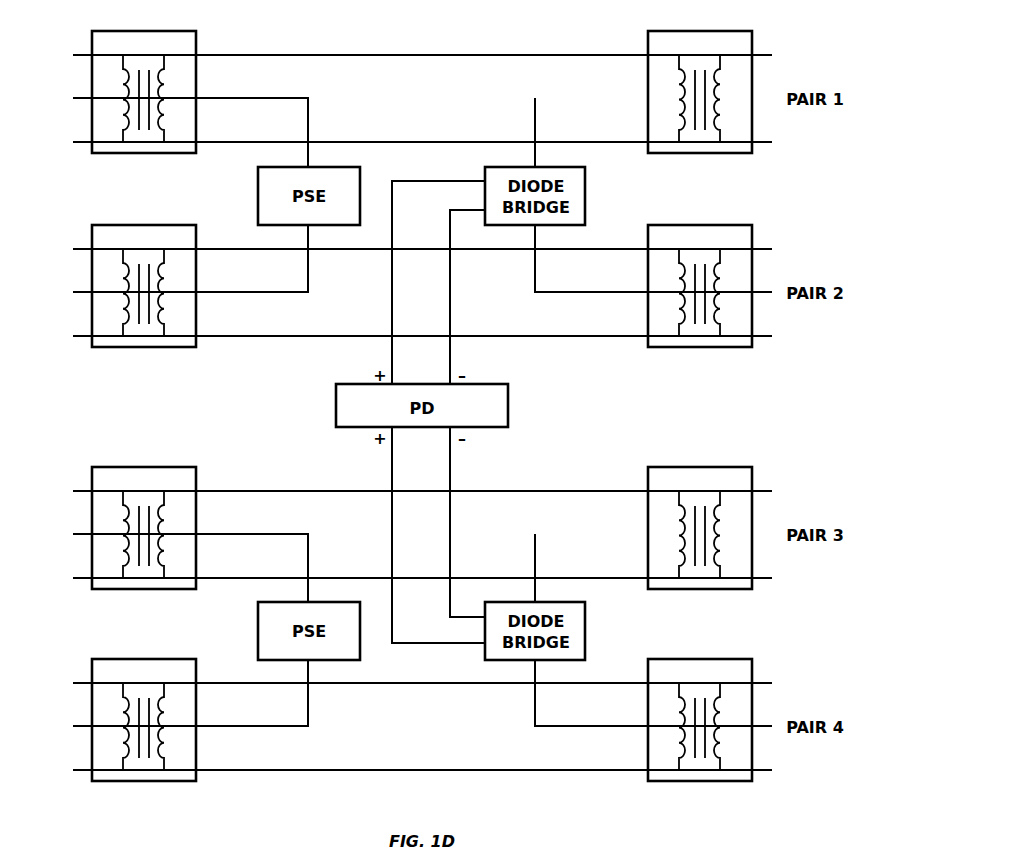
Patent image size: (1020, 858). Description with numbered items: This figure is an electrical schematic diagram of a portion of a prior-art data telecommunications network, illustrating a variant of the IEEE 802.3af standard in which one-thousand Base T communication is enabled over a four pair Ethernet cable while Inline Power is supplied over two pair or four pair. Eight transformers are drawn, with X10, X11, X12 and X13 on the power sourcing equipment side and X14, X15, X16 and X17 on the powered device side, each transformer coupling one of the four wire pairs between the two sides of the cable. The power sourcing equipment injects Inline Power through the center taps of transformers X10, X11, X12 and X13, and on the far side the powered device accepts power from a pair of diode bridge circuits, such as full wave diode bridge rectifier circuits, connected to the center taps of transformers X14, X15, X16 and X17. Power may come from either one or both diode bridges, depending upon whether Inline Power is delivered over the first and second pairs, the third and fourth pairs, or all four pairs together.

The transformer X10 (pair 1, PSE side) X10 is at (144, 93).
The transformer X11 (pair 2, PSE side) X11 is at (144, 287).
The transformer X12 (pair 3, PSE side) X12 is at (144, 529).
The transformer X13 (pair 4, PSE side) X13 is at (144, 721).
The transformer X14 (pair 1, PD side) X14 is at (700, 93).
The transformer X15 (pair 2, PD side) X15 is at (700, 287).
The transformer X16 (pair 3, PD side) X16 is at (700, 529).
The transformer X17 (pair 4, PD side) X17 is at (700, 721).